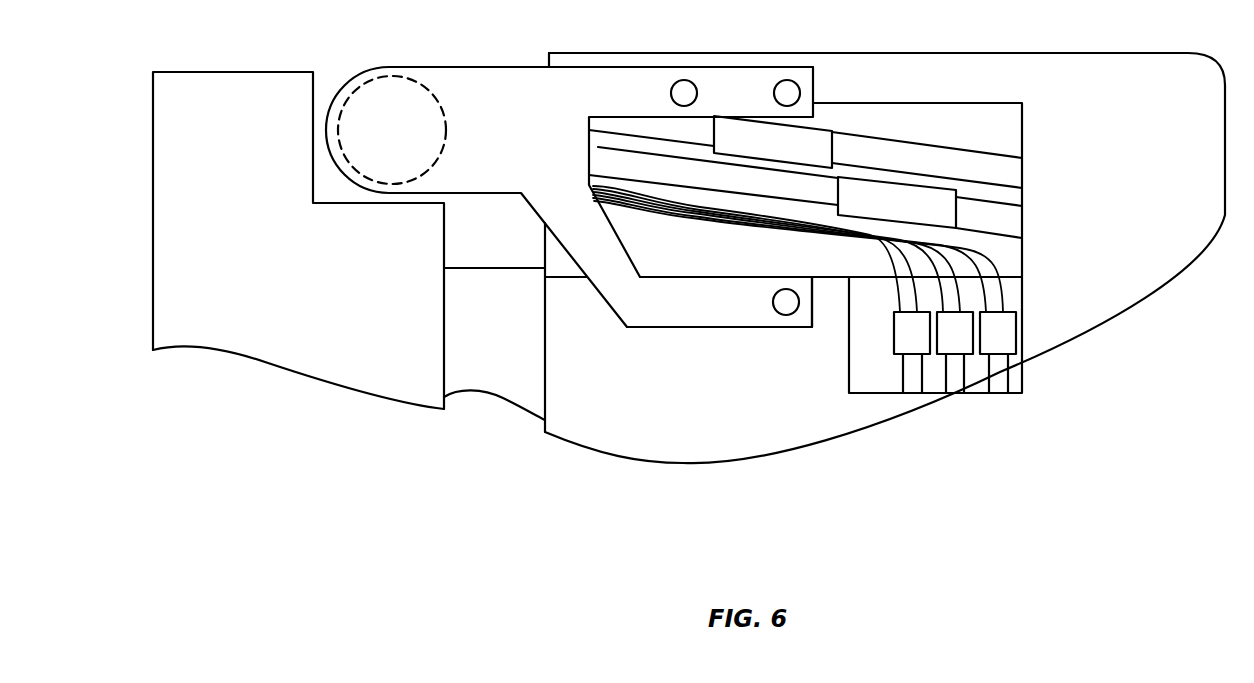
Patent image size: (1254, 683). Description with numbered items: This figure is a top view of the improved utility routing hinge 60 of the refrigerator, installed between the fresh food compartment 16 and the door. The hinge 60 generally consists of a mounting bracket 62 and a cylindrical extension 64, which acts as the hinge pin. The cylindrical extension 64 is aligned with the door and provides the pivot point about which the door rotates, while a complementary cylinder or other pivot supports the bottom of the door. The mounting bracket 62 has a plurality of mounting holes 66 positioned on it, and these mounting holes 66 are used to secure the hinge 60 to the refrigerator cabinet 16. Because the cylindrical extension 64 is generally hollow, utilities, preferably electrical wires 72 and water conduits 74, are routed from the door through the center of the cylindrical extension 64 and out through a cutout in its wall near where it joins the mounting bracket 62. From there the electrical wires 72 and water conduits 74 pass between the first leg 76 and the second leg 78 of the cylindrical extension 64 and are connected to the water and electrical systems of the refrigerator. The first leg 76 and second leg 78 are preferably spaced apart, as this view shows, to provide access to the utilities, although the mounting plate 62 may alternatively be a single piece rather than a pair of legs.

The fresh food compartment 16 is at (1080, 157).
The utility routing hinge 60 is at (462, 67).
The mounting bracket 62 is at (535, 82).
The cylindrical extension 64 is at (387, 78).
The mounting holes 66 is at (684, 80).
The electrical wires 72 is at (717, 225).
The water conduits 74 is at (1006, 213).
The first leg 76 is at (590, 67).
The second leg 78 is at (643, 330).